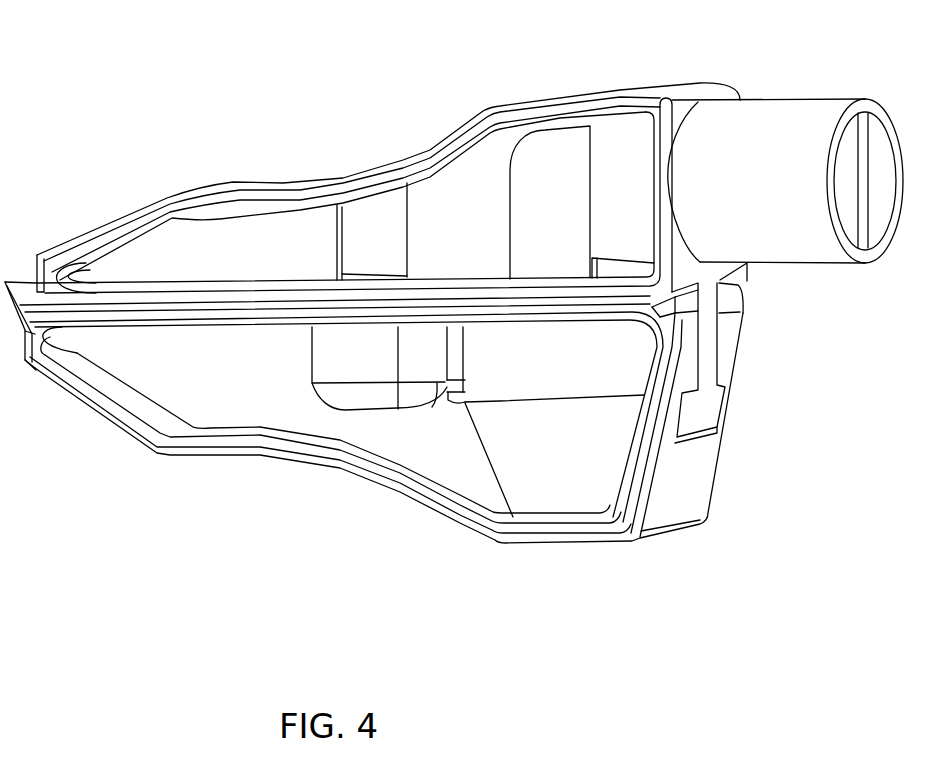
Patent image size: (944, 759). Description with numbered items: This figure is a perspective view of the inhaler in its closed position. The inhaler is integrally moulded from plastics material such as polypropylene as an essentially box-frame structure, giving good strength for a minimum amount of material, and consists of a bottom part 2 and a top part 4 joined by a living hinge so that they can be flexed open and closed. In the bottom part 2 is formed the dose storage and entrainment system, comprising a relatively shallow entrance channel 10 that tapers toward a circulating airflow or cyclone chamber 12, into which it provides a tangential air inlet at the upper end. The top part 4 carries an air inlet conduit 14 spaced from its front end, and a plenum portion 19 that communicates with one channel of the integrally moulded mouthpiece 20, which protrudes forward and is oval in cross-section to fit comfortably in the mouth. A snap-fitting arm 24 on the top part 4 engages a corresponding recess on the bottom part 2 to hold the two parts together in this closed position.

The bottom part 2 is at (454, 333).
The top part 4 is at (248, 228).
The entrance channel 10 is at (343, 368).
The cyclone chamber 12 is at (578, 379).
The air inlet conduit 14 is at (370, 280).
The plenum portion 19 is at (557, 167).
The mouthpiece 20 is at (762, 127).
The snap-fitting arm 24 is at (710, 352).